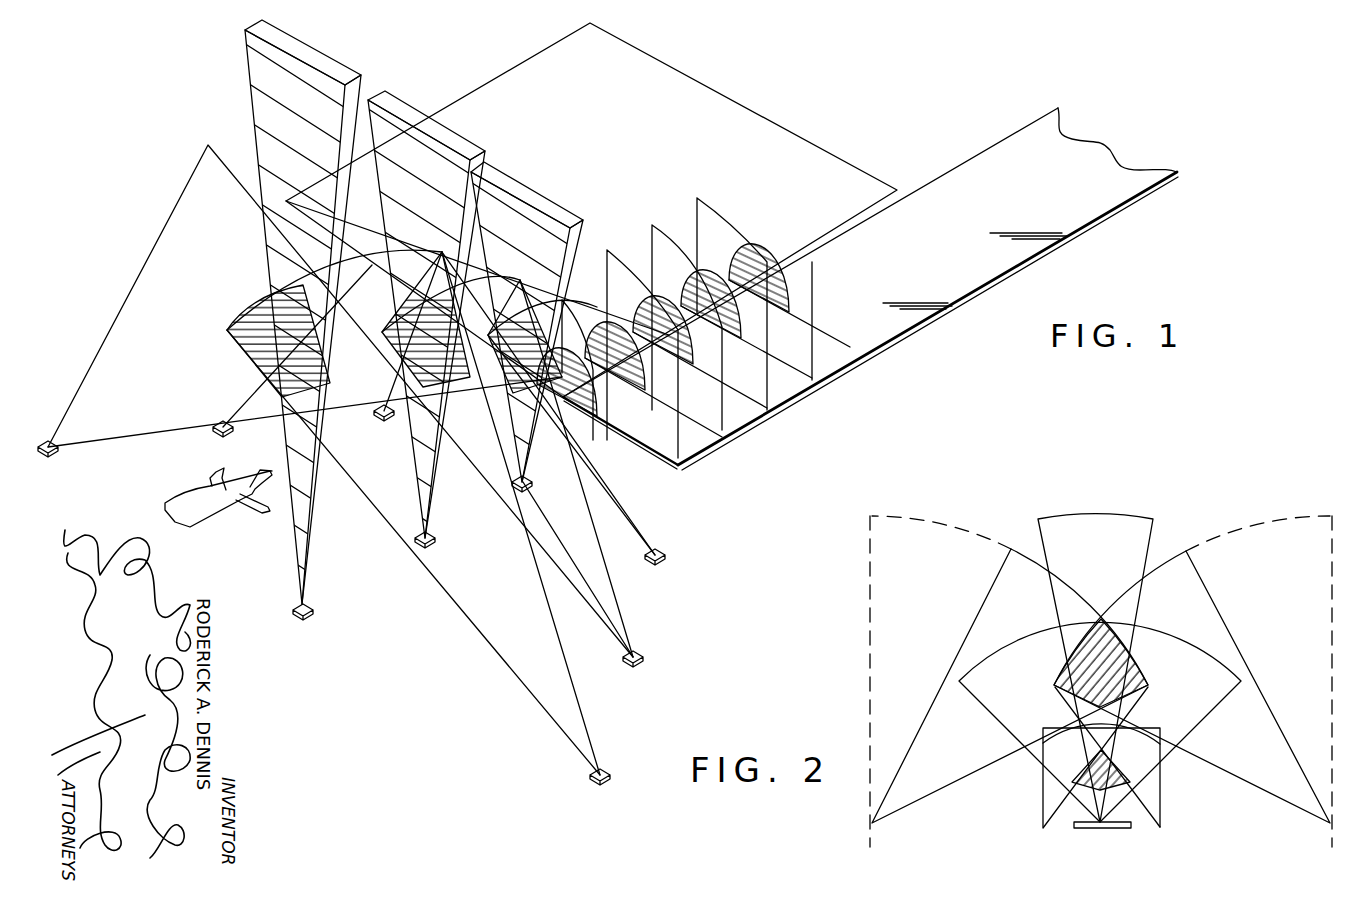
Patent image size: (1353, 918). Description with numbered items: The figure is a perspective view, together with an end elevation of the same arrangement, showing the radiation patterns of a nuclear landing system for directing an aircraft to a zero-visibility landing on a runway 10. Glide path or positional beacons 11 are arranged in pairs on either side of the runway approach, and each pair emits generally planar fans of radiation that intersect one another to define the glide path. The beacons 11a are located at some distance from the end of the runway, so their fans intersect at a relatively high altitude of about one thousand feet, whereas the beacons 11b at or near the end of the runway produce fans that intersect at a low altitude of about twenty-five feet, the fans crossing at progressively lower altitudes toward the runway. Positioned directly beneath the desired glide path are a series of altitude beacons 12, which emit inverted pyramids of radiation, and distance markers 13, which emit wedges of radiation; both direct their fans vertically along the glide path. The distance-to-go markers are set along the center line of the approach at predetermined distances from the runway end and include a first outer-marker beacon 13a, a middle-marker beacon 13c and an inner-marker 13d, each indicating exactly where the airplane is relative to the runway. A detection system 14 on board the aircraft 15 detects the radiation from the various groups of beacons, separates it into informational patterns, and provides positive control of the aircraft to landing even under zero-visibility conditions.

In FIG. 1, the runway 10 is at (920, 206).
In FIG. 2, the runway 10 is at (1122, 829).
In FIG. 1, the glide path or positional beacons 11 is at (214, 433).
In FIG. 1, the beacons 11a is at (45, 441).
In FIG. 2, the beacons 11a is at (872, 826).
In FIG. 1, the beacons 11b is at (563, 302).
In FIG. 2, the beacons 11b is at (1043, 828).
In FIG. 1, the altitude beacons 12 is at (629, 463).
In FIG. 2, the altitude beacons 12 is at (1093, 828).
In FIG. 2, the distance markers 13 is at (1068, 785).
In FIG. 1, the first outer-marker beacon 13a is at (315, 612).
In FIG. 1, the middle-marker beacon 13c is at (436, 541).
In FIG. 1, the inner-marker 13d is at (530, 489).
In FIG. 1, the detection system 14 is at (218, 488).
In FIG. 1, the aircraft 15 is at (230, 498).